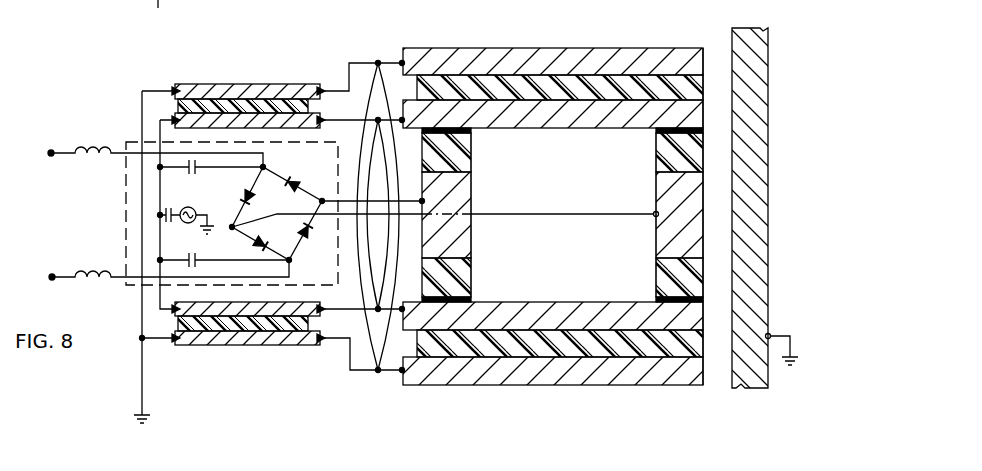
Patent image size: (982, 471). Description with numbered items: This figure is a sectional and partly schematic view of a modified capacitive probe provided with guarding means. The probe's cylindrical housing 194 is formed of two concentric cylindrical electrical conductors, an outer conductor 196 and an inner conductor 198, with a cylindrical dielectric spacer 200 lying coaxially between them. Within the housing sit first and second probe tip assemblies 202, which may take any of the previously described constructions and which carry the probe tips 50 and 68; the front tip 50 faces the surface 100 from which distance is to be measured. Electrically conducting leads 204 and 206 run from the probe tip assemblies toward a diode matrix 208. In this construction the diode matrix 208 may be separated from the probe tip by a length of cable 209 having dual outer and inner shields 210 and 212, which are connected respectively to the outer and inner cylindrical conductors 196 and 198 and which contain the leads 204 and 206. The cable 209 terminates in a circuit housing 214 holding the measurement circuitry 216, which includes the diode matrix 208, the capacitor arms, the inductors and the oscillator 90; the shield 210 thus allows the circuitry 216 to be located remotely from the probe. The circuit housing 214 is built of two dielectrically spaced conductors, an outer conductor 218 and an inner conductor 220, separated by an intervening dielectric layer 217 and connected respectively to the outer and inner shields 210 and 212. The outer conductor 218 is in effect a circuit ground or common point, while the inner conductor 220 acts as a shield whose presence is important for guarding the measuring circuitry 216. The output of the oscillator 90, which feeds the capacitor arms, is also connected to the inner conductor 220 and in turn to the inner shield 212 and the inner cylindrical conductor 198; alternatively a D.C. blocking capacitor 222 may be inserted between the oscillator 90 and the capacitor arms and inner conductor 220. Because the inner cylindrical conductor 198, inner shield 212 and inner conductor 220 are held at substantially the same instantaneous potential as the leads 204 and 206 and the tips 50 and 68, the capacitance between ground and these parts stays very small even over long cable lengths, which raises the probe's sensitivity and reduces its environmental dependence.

The surface 100 is at (732, 48).
The front probe tip 50 is at (668, 192).
The probe tip 68 is at (457, 191).
The probe tip assemblies 202 is at (648, 237).
The electrically conducting lead 204 is at (533, 213).
The electrically conducting lead 206 is at (356, 198).
The diode matrix 208 is at (306, 249).
The cable 209 is at (373, 379).
The outer shield 210 is at (378, 62).
The inner shield 212 is at (378, 119).
The circuit housing 214 is at (254, 354).
The measurement circuitry 216 is at (126, 207).
The dielectric layer 217 is at (233, 325).
The outer conductor 218 is at (214, 342).
The inner conductor 220 is at (262, 310).
The D.C. blocking capacitor 222 is at (169, 207).
The oscillator 90 is at (192, 224).
The cylindrical housing 194 is at (553, 240).
The outer conductor 196 is at (512, 373).
The inner conductor 198 is at (548, 318).
The dielectric spacer 200 is at (490, 343).